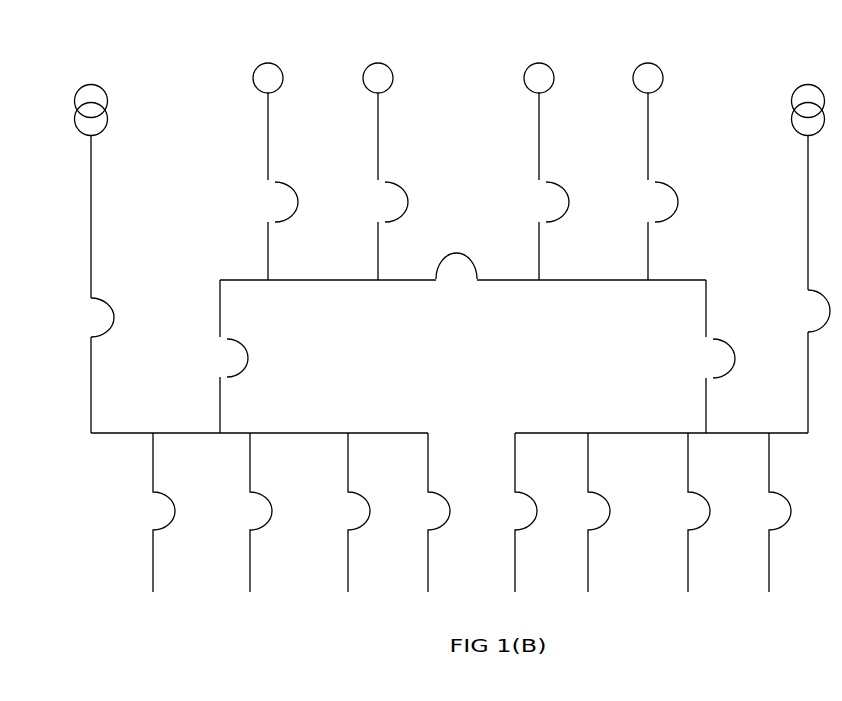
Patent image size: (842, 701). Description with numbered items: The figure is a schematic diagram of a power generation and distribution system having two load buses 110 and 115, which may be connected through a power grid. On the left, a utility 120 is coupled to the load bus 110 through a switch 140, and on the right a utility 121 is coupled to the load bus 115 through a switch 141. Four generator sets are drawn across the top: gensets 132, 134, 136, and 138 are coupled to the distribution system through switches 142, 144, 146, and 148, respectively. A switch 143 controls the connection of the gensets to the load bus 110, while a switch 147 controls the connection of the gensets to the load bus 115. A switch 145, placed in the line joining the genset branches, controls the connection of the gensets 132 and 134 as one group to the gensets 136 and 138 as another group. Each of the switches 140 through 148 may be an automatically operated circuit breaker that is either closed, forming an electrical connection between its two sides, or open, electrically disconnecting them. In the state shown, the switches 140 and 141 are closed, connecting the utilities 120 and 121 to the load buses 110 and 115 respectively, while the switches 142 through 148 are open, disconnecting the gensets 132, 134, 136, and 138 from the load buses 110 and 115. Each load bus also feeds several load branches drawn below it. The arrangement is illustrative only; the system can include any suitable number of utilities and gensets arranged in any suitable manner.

The load bus 110 is at (305, 432).
The load bus 115 is at (633, 432).
The utility 120 is at (93, 172).
The utility 121 is at (813, 167).
The genset 132 is at (264, 105).
The genset 134 is at (374, 105).
The genset 136 is at (539, 105).
The genset 138 is at (644, 105).
The switch 140 is at (83, 365).
The switch 141 is at (796, 361).
The switch 142 is at (264, 231).
The switch 143 is at (215, 356).
The switch 144 is at (379, 231).
The switch 145 is at (463, 247).
The switch 146 is at (538, 231).
The switch 147 is at (700, 356).
The switch 148 is at (650, 231).